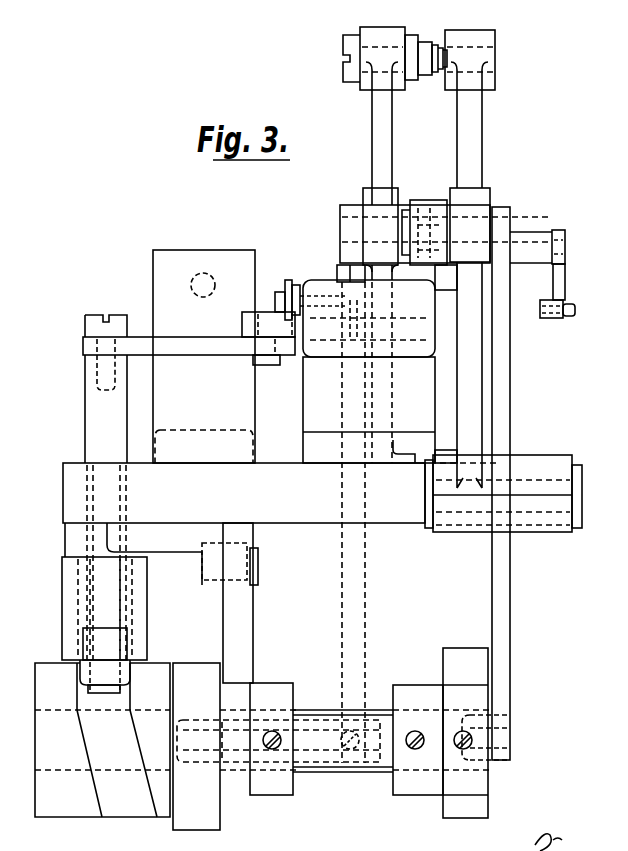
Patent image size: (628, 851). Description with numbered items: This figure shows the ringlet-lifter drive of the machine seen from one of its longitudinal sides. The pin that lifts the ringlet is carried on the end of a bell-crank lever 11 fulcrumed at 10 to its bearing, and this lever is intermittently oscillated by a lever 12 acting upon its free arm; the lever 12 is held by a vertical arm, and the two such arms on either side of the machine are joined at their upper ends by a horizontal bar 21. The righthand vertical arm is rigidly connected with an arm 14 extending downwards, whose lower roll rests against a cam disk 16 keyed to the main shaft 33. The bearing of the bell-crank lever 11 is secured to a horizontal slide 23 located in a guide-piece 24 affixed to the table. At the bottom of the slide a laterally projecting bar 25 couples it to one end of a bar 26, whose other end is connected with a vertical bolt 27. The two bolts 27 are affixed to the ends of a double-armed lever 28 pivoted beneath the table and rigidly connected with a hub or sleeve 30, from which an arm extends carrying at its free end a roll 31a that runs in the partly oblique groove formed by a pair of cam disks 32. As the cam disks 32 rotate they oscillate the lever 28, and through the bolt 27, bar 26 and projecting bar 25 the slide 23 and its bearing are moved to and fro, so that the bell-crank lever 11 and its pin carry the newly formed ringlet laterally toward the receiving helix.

The fulcrum 10 is at (531, 234).
The bell-crank lever 11 is at (562, 301).
The lever 12 is at (430, 209).
The arm 14 is at (508, 641).
The cam disk 16 is at (219, 823).
The horizontal bar 21 is at (405, 36).
The horizontal slide 23 is at (301, 292).
The guide-piece 24 is at (369, 521).
The laterally projecting bar 25 is at (295, 340).
The bar 26 is at (134, 340).
The vertical bolt 27 is at (86, 418).
The double-armed lever 28 is at (68, 546).
The hub or sleeve 30 is at (142, 595).
The roll 31a is at (118, 681).
The cam disks 32 is at (157, 815).
The main shaft 33 is at (118, 772).